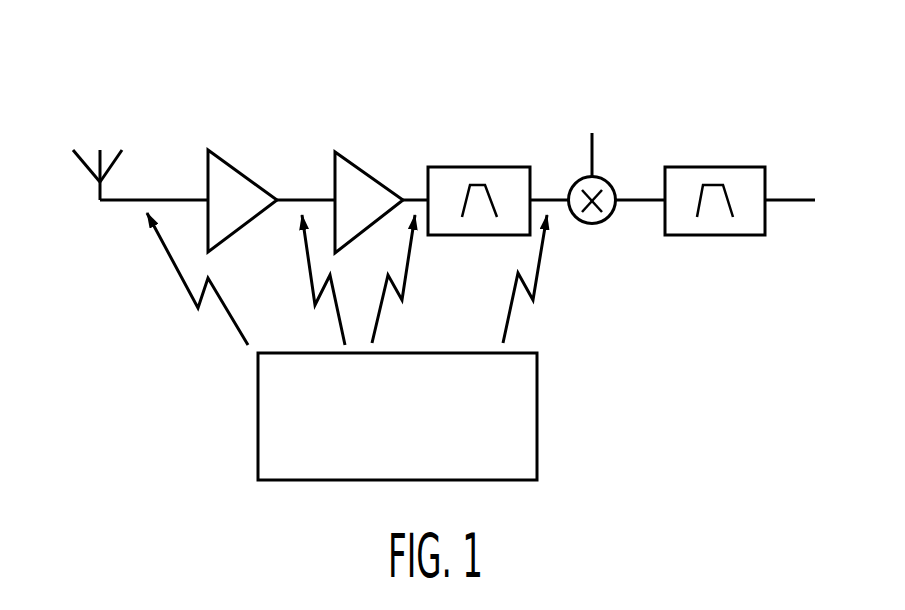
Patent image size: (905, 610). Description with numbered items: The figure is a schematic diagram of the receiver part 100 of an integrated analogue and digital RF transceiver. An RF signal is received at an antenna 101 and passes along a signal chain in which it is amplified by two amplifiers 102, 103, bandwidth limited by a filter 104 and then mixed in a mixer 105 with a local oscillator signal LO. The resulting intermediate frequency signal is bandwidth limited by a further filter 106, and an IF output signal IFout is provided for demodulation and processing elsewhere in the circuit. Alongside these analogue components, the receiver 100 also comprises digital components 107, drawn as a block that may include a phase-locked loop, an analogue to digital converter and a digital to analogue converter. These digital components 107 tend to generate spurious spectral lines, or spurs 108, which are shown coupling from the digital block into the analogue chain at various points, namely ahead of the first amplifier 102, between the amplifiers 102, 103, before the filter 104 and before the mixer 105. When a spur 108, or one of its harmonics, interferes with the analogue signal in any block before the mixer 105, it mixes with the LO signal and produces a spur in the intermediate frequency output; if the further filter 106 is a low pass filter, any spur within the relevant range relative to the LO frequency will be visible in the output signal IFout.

The receiver part 100 is at (129, 66).
The antenna 101 is at (100, 187).
The amplifier 102 is at (238, 167).
The amplifier 103 is at (362, 167).
The filter 104 is at (473, 167).
The mixer 105 is at (607, 222).
The further filter 106 is at (722, 167).
The digital components 107 is at (258, 410).
The spurs 108 is at (318, 298).